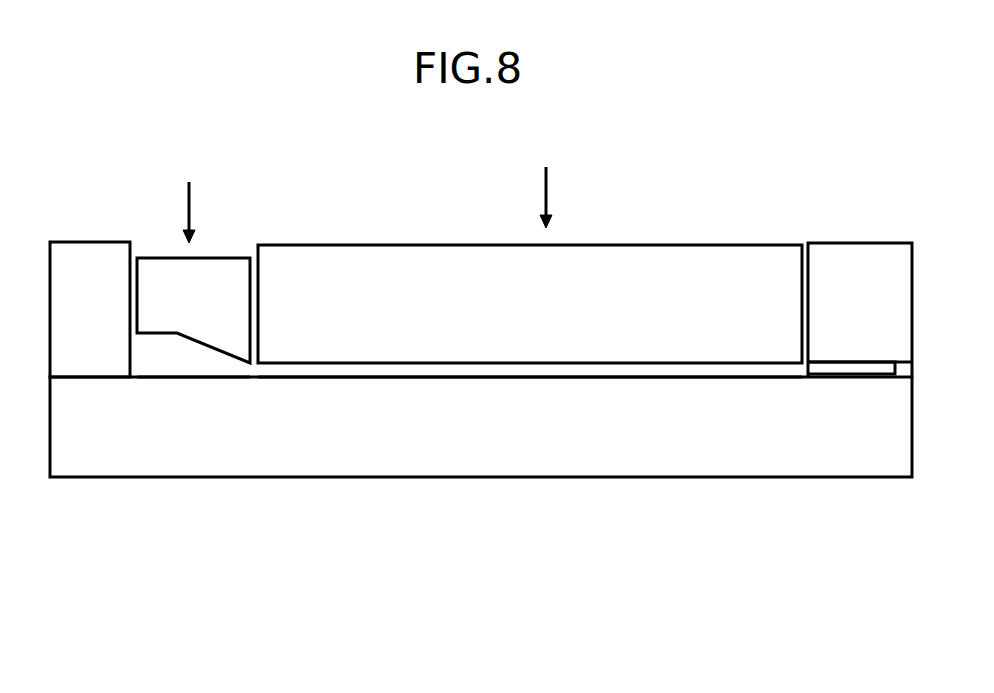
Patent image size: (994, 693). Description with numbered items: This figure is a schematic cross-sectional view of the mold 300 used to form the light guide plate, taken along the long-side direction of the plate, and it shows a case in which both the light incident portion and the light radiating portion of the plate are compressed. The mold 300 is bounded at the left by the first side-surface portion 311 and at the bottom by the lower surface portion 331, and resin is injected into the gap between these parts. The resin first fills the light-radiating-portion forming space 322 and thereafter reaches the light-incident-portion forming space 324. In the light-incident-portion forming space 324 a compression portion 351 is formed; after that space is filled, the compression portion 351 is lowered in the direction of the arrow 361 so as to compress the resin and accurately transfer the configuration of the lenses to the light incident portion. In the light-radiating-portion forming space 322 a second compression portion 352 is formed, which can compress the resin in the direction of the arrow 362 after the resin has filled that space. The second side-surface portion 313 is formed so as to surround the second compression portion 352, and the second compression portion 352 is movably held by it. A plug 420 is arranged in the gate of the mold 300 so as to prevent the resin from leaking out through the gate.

The mold 300 is at (438, 537).
The first side-surface portion 311 is at (95, 258).
The second side-surface portion 313 is at (840, 252).
The light-radiating-portion forming space 322 is at (613, 365).
The light-incident-portion forming space 324 is at (183, 363).
The lower surface portion 331 is at (507, 463).
The compression portion 351 is at (233, 267).
The second compression portion 352 is at (690, 257).
The arrow 361 is at (187, 200).
The arrow 362 is at (543, 183).
The plug 420 is at (852, 367).